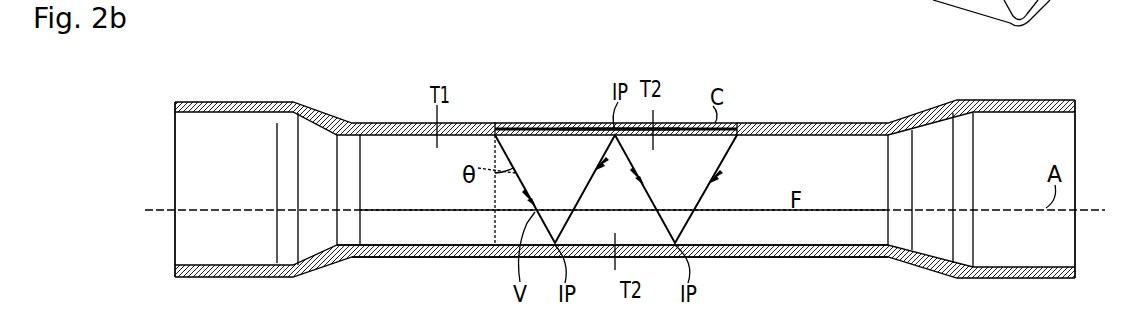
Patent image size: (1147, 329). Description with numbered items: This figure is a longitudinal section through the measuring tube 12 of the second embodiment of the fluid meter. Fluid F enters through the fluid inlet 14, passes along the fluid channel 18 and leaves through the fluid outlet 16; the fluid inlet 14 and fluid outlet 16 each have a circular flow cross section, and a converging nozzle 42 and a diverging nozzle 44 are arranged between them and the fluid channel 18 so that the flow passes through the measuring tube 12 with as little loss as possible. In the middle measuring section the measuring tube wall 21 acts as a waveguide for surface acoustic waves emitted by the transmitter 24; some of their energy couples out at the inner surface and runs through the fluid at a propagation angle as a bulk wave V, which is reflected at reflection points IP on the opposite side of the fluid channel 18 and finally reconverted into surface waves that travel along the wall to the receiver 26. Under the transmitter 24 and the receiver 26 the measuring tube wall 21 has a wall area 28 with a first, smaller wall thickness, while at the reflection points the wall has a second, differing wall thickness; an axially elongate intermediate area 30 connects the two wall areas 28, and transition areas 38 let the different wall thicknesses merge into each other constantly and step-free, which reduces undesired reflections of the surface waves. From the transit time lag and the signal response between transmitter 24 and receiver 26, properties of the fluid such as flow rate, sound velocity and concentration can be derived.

The measuring tube 12 is at (858, 116).
The fluid inlet 14 is at (175, 193).
The fluid outlet 16 is at (1063, 232).
The fluid channel 18 is at (410, 201).
The measuring tube wall 21 is at (736, 258).
The transmitter 24 is at (495, 127).
The receiver 26 is at (765, 123).
The wall area 28 is at (525, 123).
The intermediate area 30 is at (598, 123).
The transition area 38 is at (552, 123).
The converging nozzle 42 is at (353, 263).
The diverging nozzle 44 is at (848, 258).